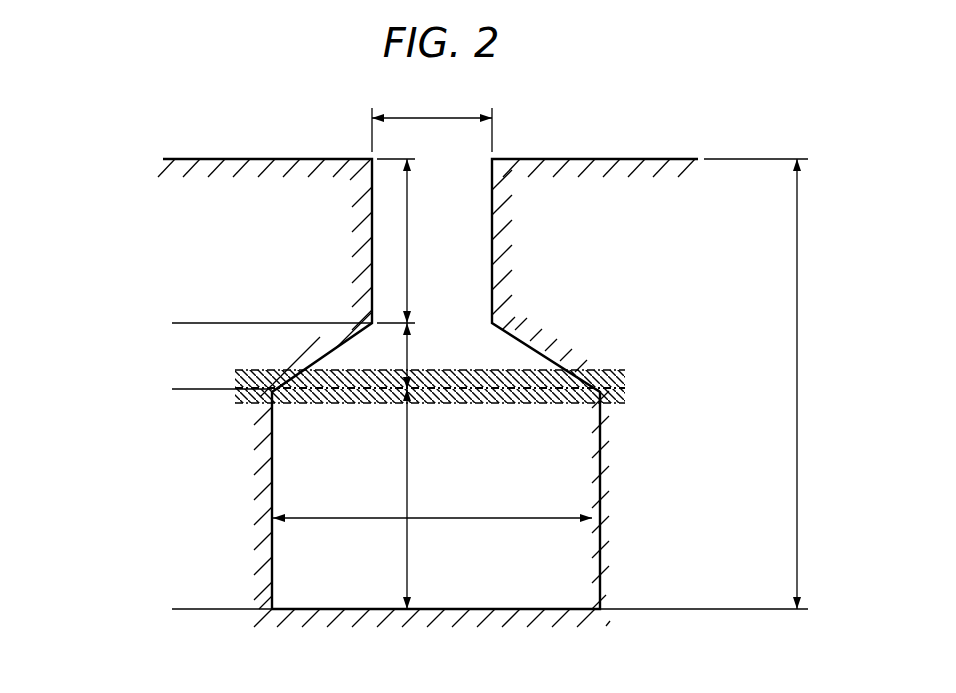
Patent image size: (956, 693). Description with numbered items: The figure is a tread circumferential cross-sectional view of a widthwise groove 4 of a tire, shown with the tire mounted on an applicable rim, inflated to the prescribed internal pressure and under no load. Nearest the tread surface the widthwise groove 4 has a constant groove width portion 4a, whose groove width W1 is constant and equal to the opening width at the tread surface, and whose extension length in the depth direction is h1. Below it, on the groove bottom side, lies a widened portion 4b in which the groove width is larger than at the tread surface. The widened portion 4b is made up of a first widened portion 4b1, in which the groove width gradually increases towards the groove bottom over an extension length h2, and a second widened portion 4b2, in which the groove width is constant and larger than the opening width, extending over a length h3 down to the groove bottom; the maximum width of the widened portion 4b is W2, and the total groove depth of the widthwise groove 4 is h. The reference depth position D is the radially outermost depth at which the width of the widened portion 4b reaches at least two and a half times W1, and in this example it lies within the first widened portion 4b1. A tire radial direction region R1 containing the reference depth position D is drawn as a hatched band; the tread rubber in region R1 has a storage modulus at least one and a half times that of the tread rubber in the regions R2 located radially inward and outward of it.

The widthwise groove 4 is at (67, 237).
The constant groove width portion 4a is at (390, 249).
The widened portion 4b is at (338, 460).
The first widened portion 4b1 is at (171, 323).
The second widened portion 4b2 is at (362, 499).
The tire radial direction region R1 is at (620, 390).
The regions inward and outward in the tire radial direction R2 is at (593, 290).
The reference depth position D is at (238, 384).
The groove width of the constant groove width portion W1 is at (432, 122).
The maximum width of the widened portion W2 is at (432, 508).
The groove depth h is at (708, 384).
The extension length of the constant groove width portion h1 is at (408, 241).
The extension length of the first widened portion h2 is at (421, 356).
The extension length of the second widened portion h3 is at (420, 499).